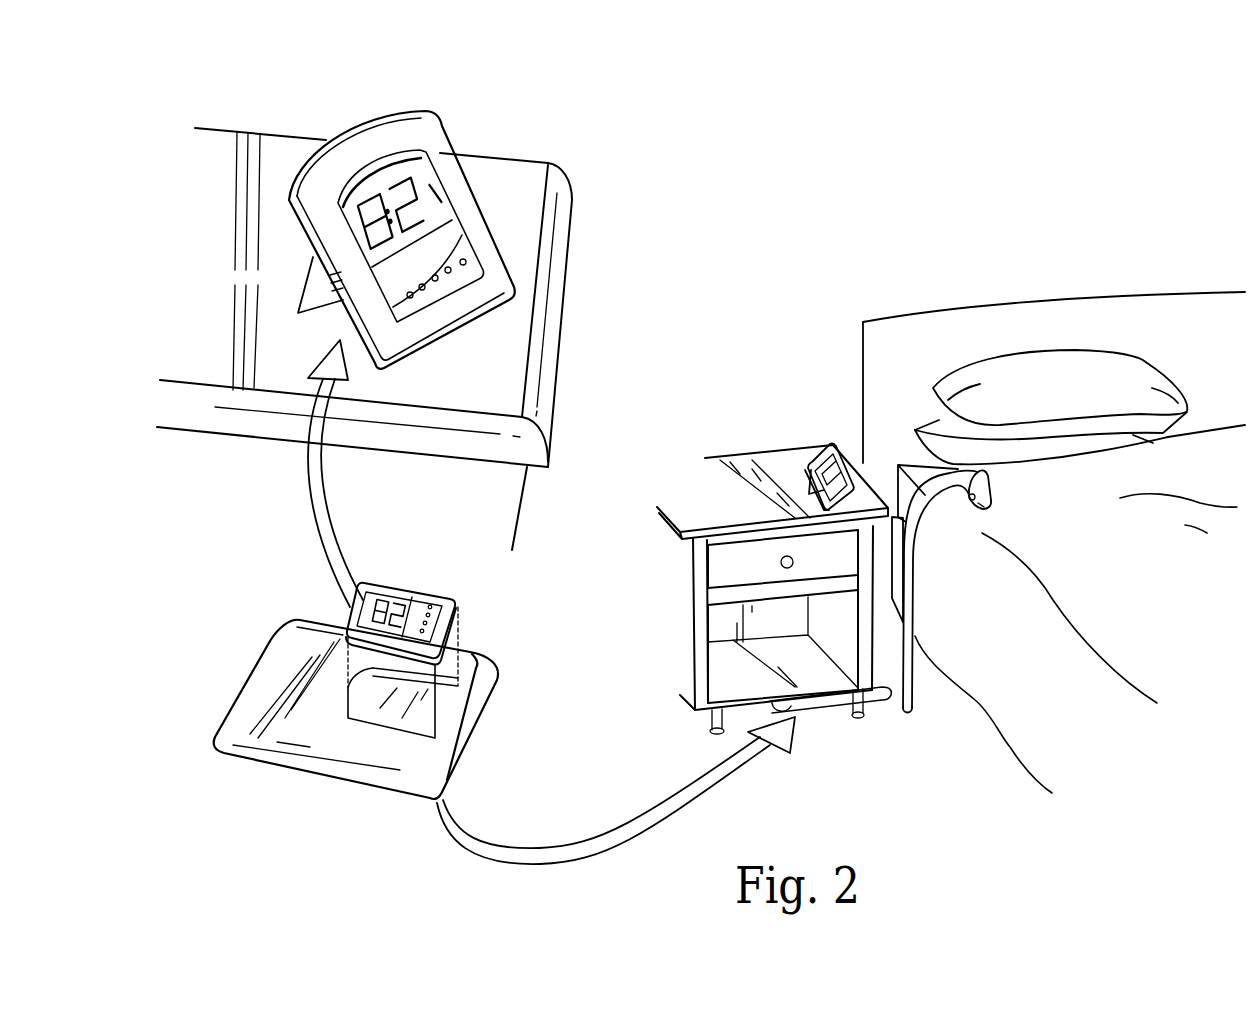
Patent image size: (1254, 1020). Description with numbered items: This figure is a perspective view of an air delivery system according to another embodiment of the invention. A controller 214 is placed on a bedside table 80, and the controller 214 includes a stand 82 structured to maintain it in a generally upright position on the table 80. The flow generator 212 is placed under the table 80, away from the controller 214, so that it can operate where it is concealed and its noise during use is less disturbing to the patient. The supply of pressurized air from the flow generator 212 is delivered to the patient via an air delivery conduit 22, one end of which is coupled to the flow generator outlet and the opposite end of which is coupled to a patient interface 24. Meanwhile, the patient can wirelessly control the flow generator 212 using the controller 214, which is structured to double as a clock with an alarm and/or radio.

The controller 214 is at (394, 100).
The bedside table 80 is at (527, 216).
The stand 82 is at (315, 298).
The flow generator 212 is at (302, 786).
The air delivery conduit 22 is at (912, 610).
The patient interface 24 is at (987, 502).